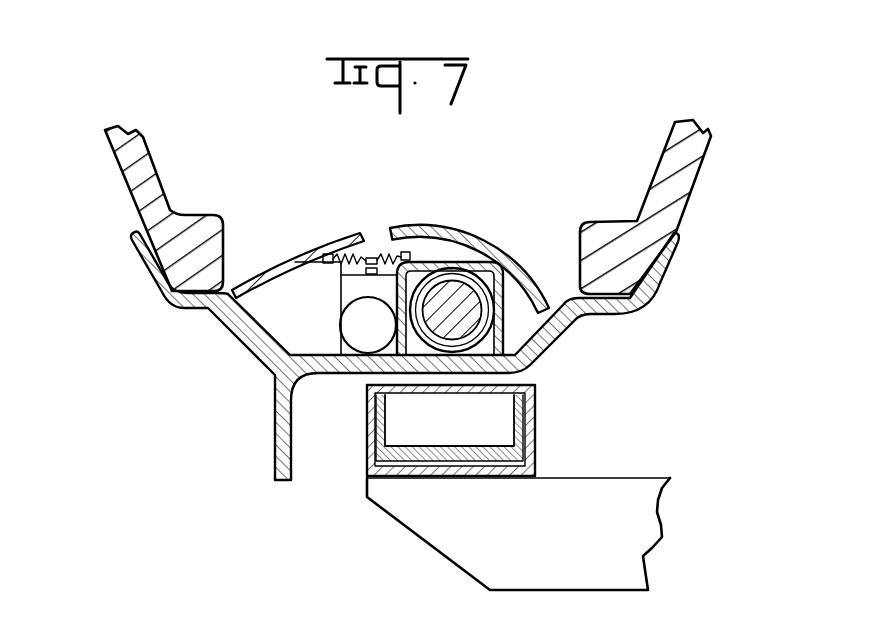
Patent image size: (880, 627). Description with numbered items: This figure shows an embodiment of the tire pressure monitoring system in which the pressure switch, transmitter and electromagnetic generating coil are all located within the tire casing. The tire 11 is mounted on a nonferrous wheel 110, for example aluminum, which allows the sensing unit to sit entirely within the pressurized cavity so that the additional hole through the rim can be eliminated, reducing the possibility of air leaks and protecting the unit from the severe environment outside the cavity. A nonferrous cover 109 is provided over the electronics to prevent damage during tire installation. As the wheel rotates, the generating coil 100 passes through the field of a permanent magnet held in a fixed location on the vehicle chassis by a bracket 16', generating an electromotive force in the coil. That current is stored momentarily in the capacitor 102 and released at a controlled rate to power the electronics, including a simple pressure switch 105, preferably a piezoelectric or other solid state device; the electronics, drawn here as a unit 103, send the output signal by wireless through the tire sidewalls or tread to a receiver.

The tire 11 is at (126, 188).
The generating coil 100 is at (467, 290).
The capacitor 102 is at (380, 328).
The transmitter circuit 103 is at (307, 306).
The pressure switch 105 is at (373, 256).
The nonferrous cover 109 is at (463, 234).
The nonferrous wheel 110 is at (278, 431).
The bracket 16' is at (540, 504).